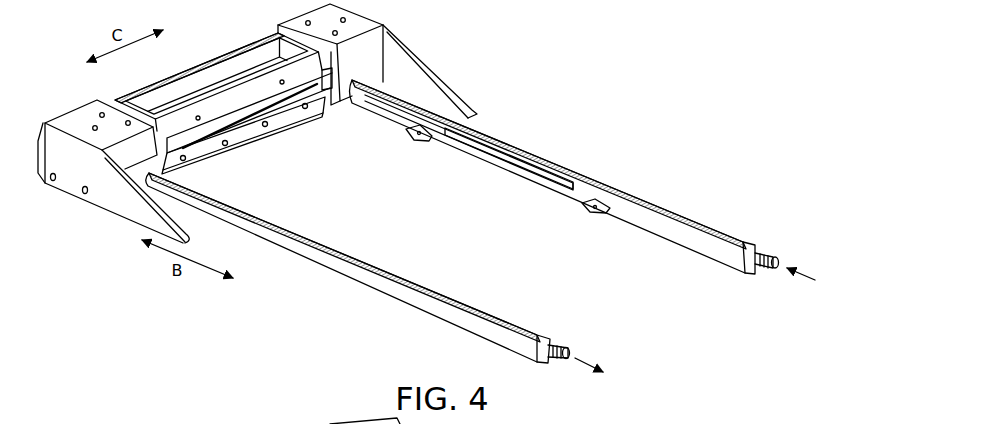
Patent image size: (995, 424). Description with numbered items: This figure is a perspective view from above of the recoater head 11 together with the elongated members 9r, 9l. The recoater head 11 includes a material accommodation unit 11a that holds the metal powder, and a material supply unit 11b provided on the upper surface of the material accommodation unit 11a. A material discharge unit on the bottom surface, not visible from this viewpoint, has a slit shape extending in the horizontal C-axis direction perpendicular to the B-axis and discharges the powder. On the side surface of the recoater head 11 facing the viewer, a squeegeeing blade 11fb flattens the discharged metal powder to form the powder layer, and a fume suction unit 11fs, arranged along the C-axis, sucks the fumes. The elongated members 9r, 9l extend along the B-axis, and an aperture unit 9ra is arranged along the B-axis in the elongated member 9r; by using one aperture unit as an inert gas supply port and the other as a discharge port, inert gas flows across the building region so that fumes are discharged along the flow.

The recoater head 11 is at (238, 40).
The material accommodation unit 11a is at (150, 91).
The material supply unit 11b is at (208, 80).
The fume suction unit 11fs is at (308, 105).
The squeegeeing blade 11fb is at (247, 143).
The elongated member 9l is at (390, 288).
The elongated member 9r is at (568, 175).
The aperture unit 9ra is at (507, 157).